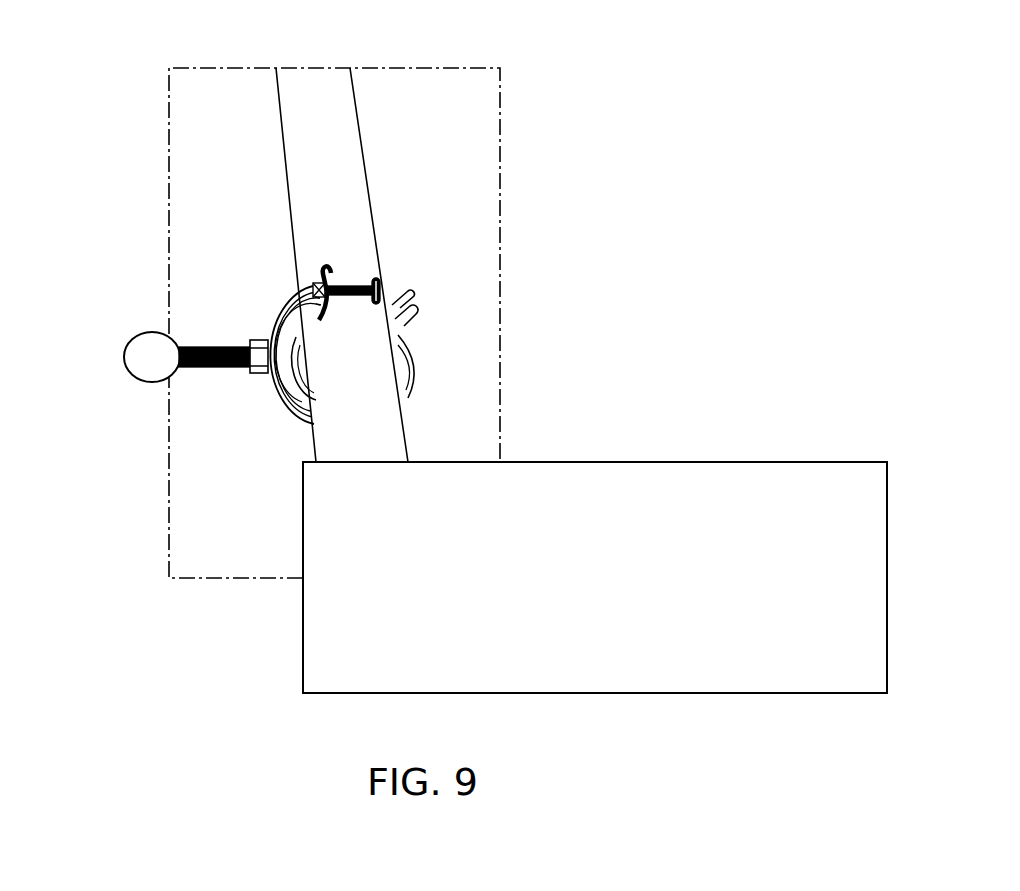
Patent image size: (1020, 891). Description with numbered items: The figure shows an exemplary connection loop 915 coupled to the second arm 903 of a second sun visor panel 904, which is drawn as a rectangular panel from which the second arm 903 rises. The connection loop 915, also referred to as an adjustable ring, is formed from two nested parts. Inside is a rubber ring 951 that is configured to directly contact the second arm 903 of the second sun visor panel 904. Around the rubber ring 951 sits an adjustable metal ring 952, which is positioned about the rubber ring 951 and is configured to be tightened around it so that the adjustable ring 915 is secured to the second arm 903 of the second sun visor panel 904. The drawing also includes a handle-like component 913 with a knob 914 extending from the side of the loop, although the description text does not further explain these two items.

The second arm 903 is at (354, 117).
The second sun visor panel 904 is at (686, 479).
The handle 913 is at (199, 383).
The knob 914 is at (140, 336).
The connection loop 915 is at (272, 285).
The rubber ring 951 is at (280, 407).
The adjustable metal ring 952 is at (274, 318).